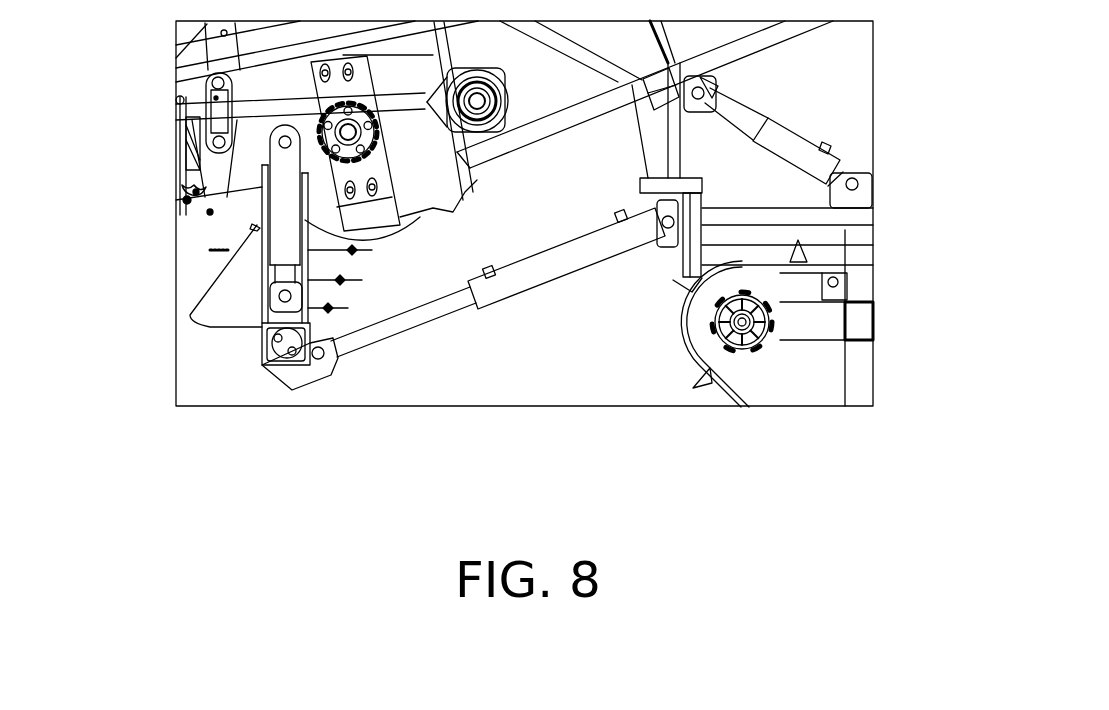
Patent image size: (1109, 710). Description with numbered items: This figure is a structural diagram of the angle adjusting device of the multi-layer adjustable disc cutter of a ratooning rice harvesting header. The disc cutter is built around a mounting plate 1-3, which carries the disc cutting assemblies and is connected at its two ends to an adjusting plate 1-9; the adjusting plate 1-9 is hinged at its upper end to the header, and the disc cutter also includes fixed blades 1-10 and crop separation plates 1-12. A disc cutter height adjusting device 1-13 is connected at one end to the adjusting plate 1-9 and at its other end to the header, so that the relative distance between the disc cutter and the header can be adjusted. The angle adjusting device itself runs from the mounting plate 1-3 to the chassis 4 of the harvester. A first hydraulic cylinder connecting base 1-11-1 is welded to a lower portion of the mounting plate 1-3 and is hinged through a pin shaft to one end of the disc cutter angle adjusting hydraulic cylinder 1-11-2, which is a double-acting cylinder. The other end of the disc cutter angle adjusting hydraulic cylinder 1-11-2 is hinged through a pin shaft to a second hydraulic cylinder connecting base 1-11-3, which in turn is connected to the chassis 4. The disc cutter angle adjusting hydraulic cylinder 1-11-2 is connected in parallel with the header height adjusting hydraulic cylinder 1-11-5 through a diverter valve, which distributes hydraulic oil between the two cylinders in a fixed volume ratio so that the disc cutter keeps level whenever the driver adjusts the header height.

The disc cutter height adjusting device 1-13 is at (288, 242).
The adjusting plate 1-9 is at (268, 275).
The crop separation plates 1-12 is at (222, 303).
The fixed blades 1-10 is at (262, 327).
The mounting plate 1-3 is at (262, 365).
The first hydraulic cylinder connecting base 1-11-1 is at (293, 376).
The disc cutter angle adjusting hydraulic cylinder 1-11-2 is at (380, 338).
The second hydraulic cylinder connecting base 1-11-3 is at (668, 240).
The header height adjusting hydraulic cylinder 1-11-5 is at (790, 148).
The chassis 4 is at (857, 238).